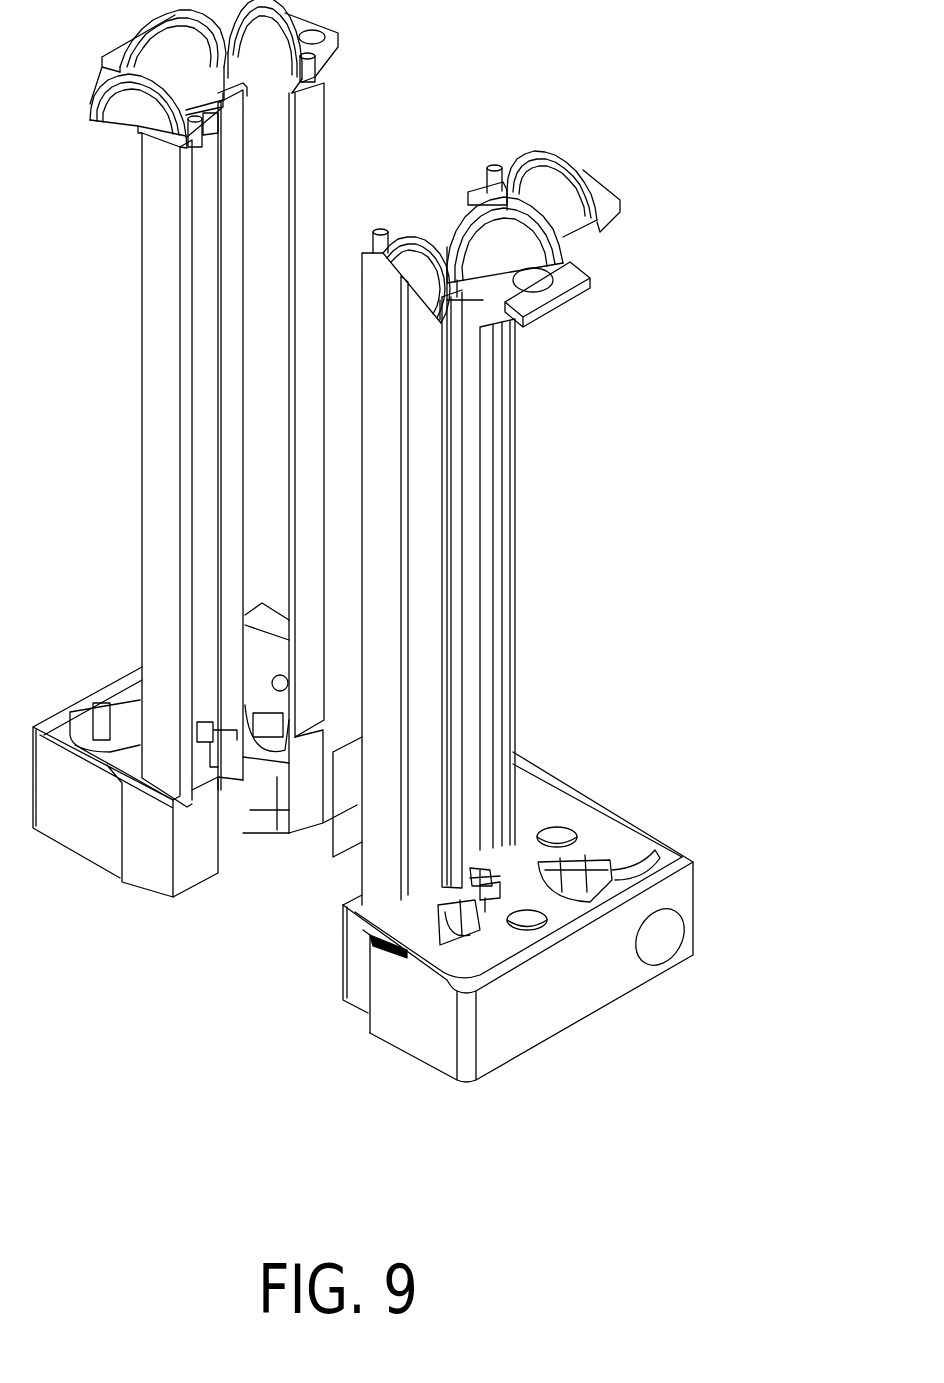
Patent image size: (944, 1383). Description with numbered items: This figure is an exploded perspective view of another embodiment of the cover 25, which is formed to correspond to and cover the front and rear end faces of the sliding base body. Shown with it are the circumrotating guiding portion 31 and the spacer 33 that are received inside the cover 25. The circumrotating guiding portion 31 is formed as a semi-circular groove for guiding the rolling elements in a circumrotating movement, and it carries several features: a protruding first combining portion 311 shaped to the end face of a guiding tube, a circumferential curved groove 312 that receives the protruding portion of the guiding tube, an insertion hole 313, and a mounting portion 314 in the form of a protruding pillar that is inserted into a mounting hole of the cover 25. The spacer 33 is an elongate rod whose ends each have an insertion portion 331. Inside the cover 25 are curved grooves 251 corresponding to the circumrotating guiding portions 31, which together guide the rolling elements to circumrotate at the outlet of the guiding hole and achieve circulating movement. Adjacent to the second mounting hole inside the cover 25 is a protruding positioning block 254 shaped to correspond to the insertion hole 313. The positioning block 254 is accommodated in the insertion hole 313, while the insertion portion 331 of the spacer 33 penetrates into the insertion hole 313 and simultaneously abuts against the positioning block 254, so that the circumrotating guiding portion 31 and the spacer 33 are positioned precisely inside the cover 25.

The cover 25 is at (597, 977).
The curved groove 251 is at (473, 880).
The positioning block 254 is at (487, 883).
The circumrotating guiding portion 31 is at (750, 750).
The first combining portion 311 is at (667, 880).
The curved groove 312 is at (550, 870).
The insertion hole 313 is at (492, 878).
The mounting portion 314 is at (497, 164).
The spacer 33 is at (470, 810).
The insertion portion 331 is at (370, 943).